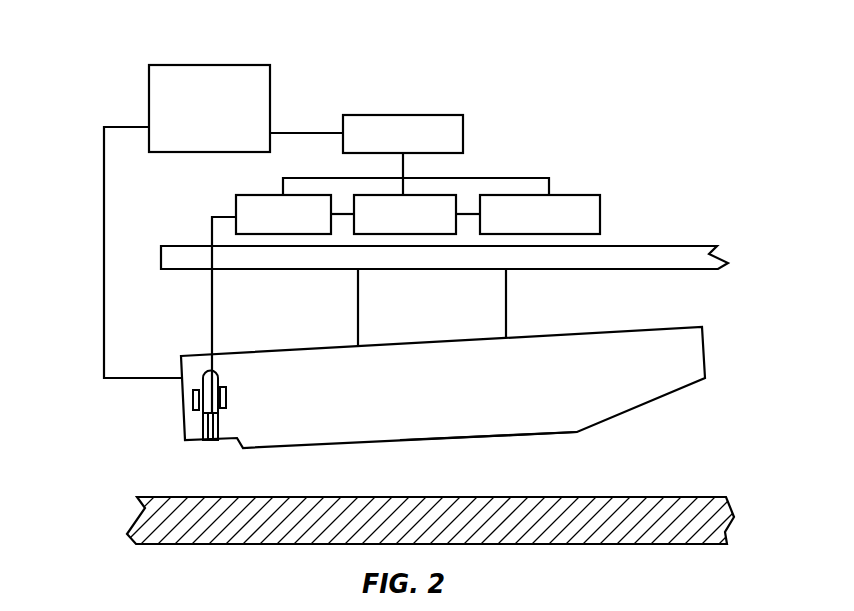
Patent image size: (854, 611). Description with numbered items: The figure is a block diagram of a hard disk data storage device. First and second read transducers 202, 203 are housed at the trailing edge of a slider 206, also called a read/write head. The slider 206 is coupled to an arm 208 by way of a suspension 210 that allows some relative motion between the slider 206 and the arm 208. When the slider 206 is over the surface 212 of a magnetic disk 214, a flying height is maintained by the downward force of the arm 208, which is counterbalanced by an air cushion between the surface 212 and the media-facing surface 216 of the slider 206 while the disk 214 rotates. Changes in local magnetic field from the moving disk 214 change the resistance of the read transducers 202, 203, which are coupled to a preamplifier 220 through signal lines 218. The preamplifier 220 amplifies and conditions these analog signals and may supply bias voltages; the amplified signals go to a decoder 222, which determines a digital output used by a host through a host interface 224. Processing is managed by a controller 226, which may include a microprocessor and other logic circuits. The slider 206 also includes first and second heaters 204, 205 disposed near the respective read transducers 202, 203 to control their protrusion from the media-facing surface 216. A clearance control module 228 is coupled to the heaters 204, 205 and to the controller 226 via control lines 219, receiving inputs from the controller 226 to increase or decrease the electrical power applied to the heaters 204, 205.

The first read transducer 202 is at (204, 440).
The second read transducer 203 is at (215, 440).
The first heater 204 is at (194, 410).
The second heater 205 is at (227, 395).
The slider 206 is at (615, 332).
The arm 208 is at (658, 250).
The suspension 210 is at (506, 300).
The surface 212 is at (618, 497).
The magnetic disk 214 is at (593, 537).
The media-facing surface 216 is at (462, 435).
The signal lines 218 is at (212, 303).
The control lines 219 is at (104, 297).
The preamplifier 220 is at (252, 195).
The decoder 222 is at (378, 195).
The host interface 224 is at (567, 194).
The controller 226 is at (378, 114).
The clearance control module 228 is at (167, 65).